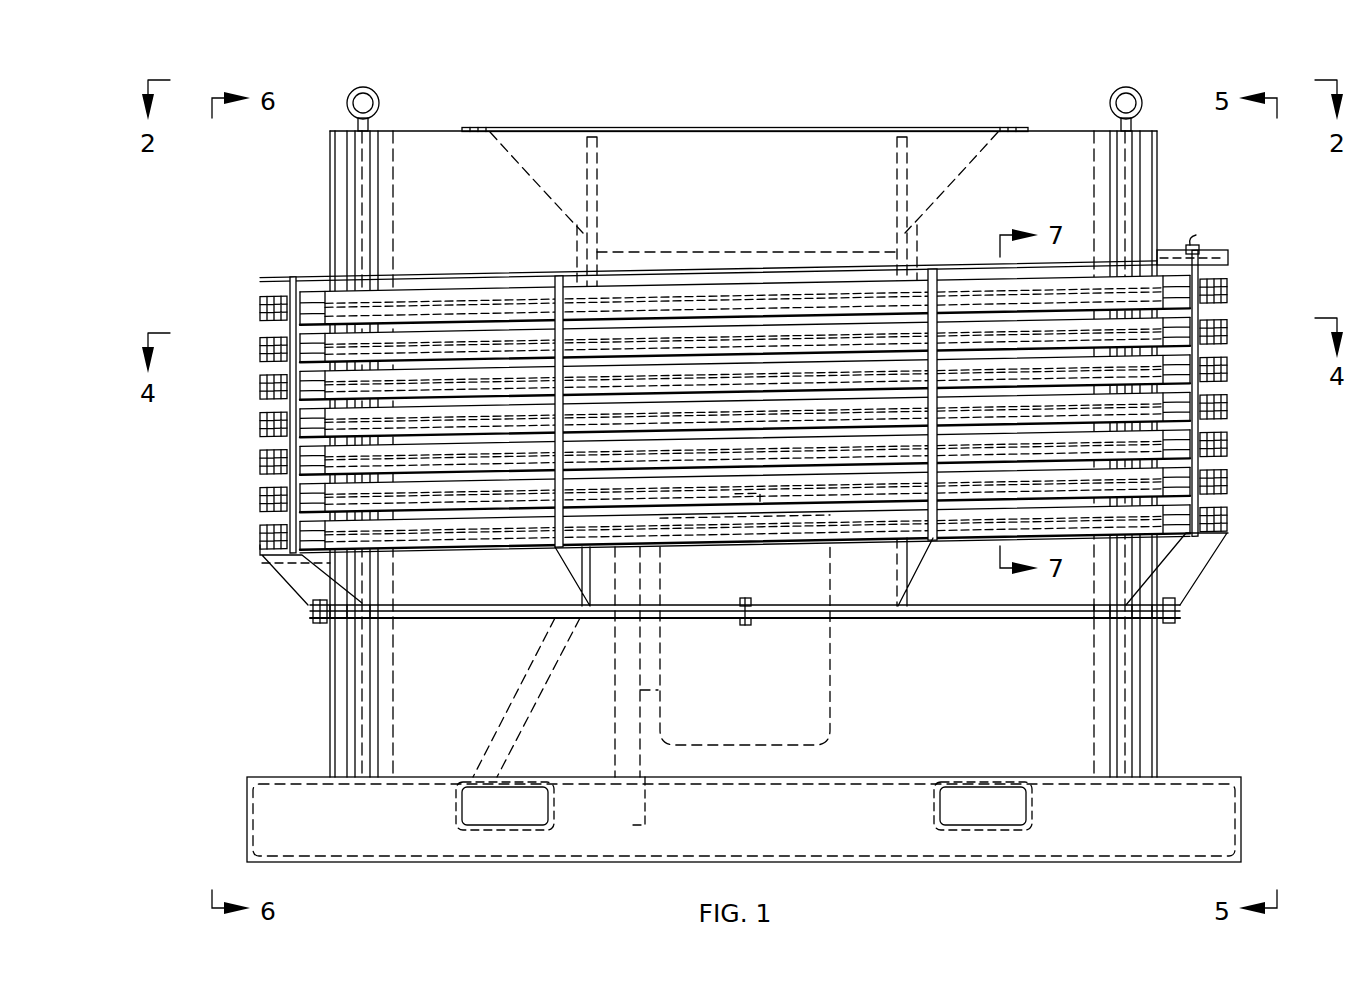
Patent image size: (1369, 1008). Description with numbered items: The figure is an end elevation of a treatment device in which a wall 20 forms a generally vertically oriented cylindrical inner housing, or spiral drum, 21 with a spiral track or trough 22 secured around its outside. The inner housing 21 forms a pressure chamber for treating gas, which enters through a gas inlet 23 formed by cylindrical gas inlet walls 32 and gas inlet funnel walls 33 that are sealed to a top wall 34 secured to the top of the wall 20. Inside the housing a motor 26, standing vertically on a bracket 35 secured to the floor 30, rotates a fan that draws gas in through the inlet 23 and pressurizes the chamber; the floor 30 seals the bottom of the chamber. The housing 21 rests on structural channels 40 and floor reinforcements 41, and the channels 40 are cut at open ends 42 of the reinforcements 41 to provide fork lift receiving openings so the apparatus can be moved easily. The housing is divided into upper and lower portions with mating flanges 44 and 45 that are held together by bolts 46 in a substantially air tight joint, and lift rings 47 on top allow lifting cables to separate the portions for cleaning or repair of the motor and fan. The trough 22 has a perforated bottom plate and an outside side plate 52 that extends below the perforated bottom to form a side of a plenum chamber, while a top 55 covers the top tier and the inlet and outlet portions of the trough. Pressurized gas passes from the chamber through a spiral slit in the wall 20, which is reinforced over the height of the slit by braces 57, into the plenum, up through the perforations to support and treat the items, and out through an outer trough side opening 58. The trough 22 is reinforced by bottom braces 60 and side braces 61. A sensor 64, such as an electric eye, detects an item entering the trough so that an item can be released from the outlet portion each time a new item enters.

The wall 20 is at (330, 190).
The cylindrical inner housing 21 is at (305, 237).
The spiral track or trough 22 is at (262, 390).
The gas inlet 23 is at (822, 148).
The motor 26 is at (830, 687).
The floor 30 is at (910, 775).
The cylindrical gas inlet walls 32 is at (577, 248).
The gas inlet funnel walls 33 is at (940, 130).
The top wall 34 is at (1075, 130).
The bracket 35 is at (532, 662).
The structural channels 40 is at (247, 826).
The floor reinforcements 41 is at (460, 805).
The open ends 42 is at (535, 815).
The mating flange 44 is at (1185, 606).
The mating flange 45 is at (1180, 616).
The bolts 46 is at (313, 616).
The lift rings 47 is at (380, 95).
The outside side plate 52 is at (1235, 486).
The top 55 is at (265, 280).
The braces 57 is at (597, 176).
The outer trough side opening 58 is at (1230, 350).
The bottom braces 60 is at (300, 580).
The side braces 61 is at (557, 275).
The sensor 64 is at (1200, 248).